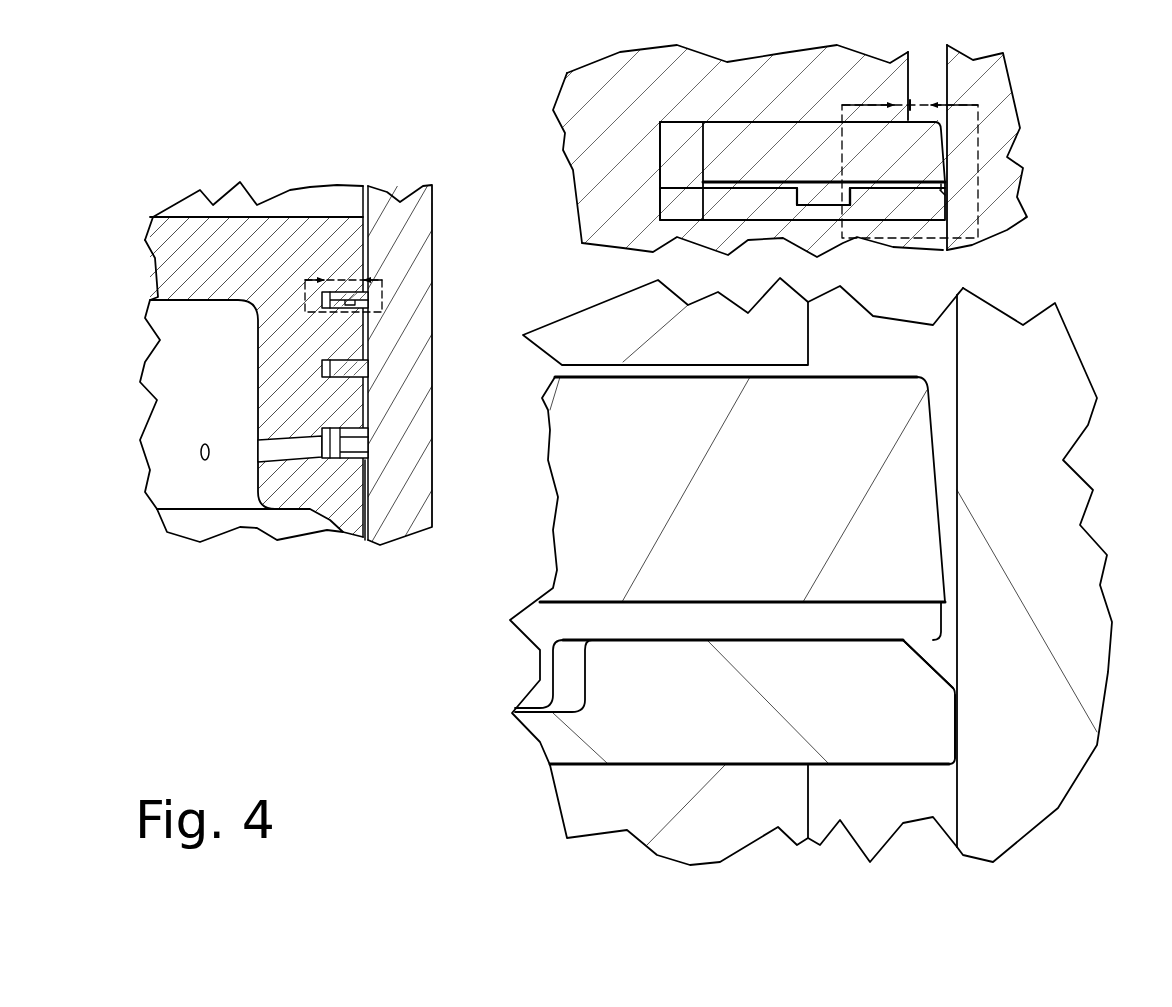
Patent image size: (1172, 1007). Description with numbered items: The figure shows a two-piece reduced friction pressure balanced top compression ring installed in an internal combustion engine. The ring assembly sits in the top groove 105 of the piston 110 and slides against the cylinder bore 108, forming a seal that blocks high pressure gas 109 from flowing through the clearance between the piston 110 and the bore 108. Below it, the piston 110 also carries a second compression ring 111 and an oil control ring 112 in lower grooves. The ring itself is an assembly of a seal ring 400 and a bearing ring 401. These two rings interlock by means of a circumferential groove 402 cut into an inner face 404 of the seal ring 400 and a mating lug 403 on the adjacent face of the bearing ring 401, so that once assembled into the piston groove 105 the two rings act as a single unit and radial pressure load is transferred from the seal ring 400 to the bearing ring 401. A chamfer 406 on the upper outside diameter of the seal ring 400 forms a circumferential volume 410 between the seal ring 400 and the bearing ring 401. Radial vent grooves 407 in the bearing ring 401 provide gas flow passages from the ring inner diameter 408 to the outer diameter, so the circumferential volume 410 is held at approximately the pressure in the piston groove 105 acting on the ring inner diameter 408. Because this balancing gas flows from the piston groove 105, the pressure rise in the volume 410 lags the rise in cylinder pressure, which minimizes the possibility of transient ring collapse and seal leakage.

The top groove 105 is at (680, 148).
The cylinder bore 108 is at (395, 218).
The high pressure gas 109 is at (362, 205).
The piston 110 is at (300, 233).
The second compression ring 111 is at (350, 368).
The oil control ring 112 is at (350, 443).
The seal ring 400 is at (360, 302).
The bearing ring 401 is at (357, 292).
The circumferential groove 402 is at (853, 200).
The mating lug 403 is at (827, 194).
The inner face 404 is at (790, 188).
The chamfer 406 is at (944, 194).
The radial vent grooves 407 is at (943, 192).
The ring inner diameter 408 is at (703, 150).
The circumferential volume 410 is at (947, 667).